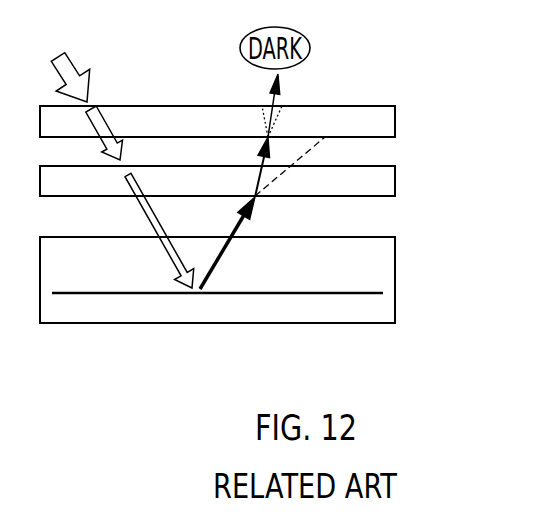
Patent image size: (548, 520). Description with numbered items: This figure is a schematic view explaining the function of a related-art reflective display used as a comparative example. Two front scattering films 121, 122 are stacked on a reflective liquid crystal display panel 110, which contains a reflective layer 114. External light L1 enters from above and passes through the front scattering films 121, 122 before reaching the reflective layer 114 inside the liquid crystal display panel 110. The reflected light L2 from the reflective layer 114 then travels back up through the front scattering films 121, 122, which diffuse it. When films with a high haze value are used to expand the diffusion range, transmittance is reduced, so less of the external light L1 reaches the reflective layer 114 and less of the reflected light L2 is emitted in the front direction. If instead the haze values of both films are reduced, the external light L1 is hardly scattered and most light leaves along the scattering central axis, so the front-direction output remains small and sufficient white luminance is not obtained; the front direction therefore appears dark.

The reflective liquid crystal display panel 110 is at (383, 273).
The reflective layer 114 is at (322, 295).
The front scattering film 121 is at (383, 182).
The front scattering film 122 is at (383, 122).
The external light L1 is at (68, 63).
The reflected light L2 is at (217, 273).